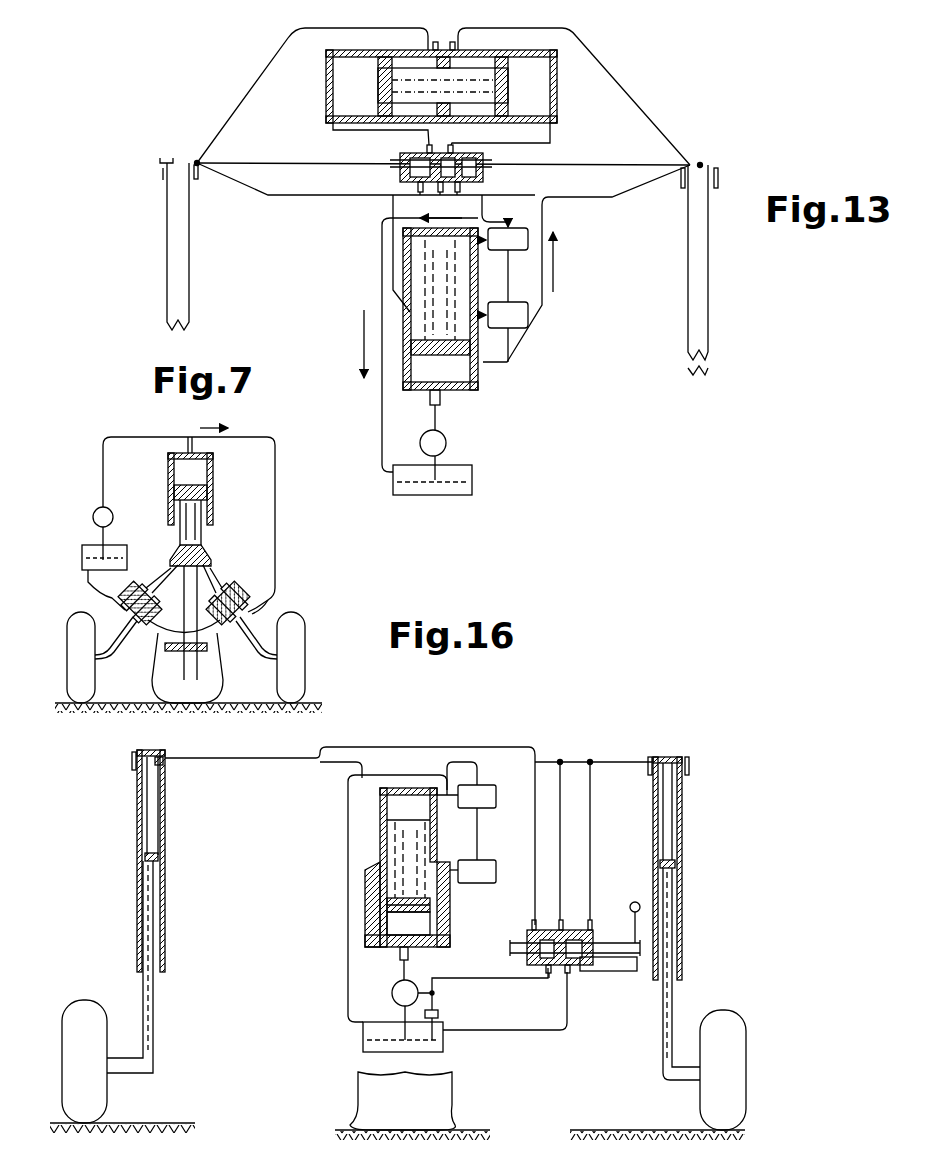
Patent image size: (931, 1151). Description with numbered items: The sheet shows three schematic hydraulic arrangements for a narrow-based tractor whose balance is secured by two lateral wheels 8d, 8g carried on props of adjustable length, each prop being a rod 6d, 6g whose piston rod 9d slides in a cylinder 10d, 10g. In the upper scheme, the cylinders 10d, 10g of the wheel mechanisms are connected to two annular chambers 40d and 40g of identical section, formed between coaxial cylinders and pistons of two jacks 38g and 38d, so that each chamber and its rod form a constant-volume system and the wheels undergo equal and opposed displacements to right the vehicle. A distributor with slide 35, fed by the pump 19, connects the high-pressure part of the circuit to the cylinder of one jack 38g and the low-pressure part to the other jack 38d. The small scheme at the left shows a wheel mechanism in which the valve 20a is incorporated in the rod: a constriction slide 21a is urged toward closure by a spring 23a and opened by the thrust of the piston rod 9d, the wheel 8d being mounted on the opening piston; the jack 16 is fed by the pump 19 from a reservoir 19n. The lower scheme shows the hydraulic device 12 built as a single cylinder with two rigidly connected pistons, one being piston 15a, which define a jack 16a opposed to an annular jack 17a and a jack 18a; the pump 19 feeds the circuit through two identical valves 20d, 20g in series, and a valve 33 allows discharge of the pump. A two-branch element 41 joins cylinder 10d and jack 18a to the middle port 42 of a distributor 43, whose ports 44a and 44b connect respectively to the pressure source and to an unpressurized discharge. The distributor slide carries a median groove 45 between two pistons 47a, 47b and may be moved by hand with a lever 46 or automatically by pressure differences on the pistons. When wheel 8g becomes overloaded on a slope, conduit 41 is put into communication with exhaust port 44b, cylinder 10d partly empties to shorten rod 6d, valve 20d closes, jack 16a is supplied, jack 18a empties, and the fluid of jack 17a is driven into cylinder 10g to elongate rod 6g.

In FIG. 13, the jack 38g is at (342, 92).
In FIG. 13, the jack 38d is at (556, 97).
In FIG. 13, the annular chamber 40g is at (410, 62).
In FIG. 13, the annular chamber 40d is at (478, 62).
In FIG. 13, the distributor slide 35 is at (496, 163).
In FIG. 13, the cylinder 10g is at (190, 273).
In FIG. 16, the cylinder 10g is at (150, 823).
In FIG. 13, the cylinder 10d is at (688, 240).
In FIG. 16, the cylinder 10d is at (672, 848).
In FIG. 7, the jack 16 is at (205, 477).
In FIG. 7, the piston rod 9d is at (250, 655).
In FIG. 7, the valve 20a is at (140, 585).
In FIG. 7, the spring 23a is at (230, 588).
In FIG. 7, the constriction slide 21a is at (273, 602).
In FIG. 7, the pump 19 is at (96, 511).
In FIG. 16, the pump 19 is at (392, 992).
In FIG. 7, the reservoir 19n is at (82, 560).
In FIG. 7, the wheel 8d is at (298, 630).
In FIG. 16, the wheel 8d is at (723, 1012).
In FIG. 16, the wheel 8g is at (86, 1004).
In FIG. 16, the rod 6g is at (162, 900).
In FIG. 16, the rod 6d is at (684, 905).
In FIG. 16, the jack 18a is at (395, 802).
In FIG. 16, the piston 15a is at (395, 838).
In FIG. 16, the annular jack 17a is at (378, 880).
In FIG. 16, the hydraulic device 12 is at (362, 897).
In FIG. 16, the jack 16a is at (383, 928).
In FIG. 16, the valve 33 is at (440, 1012).
In FIG. 16, the valve 20d is at (490, 810).
In FIG. 16, the valve 20g is at (490, 885).
In FIG. 16, the two-branch element 41 is at (562, 770).
In FIG. 16, the median groove 45 is at (534, 929).
In FIG. 16, the middle port 42 is at (562, 928).
In FIG. 16, the distributor 43 is at (596, 928).
In FIG. 16, the lever 46 is at (635, 902).
In FIG. 16, the piston 47a is at (542, 968).
In FIG. 16, the port 44a is at (550, 976).
In FIG. 16, the port 44b is at (568, 975).
In FIG. 16, the piston 47b is at (598, 972).